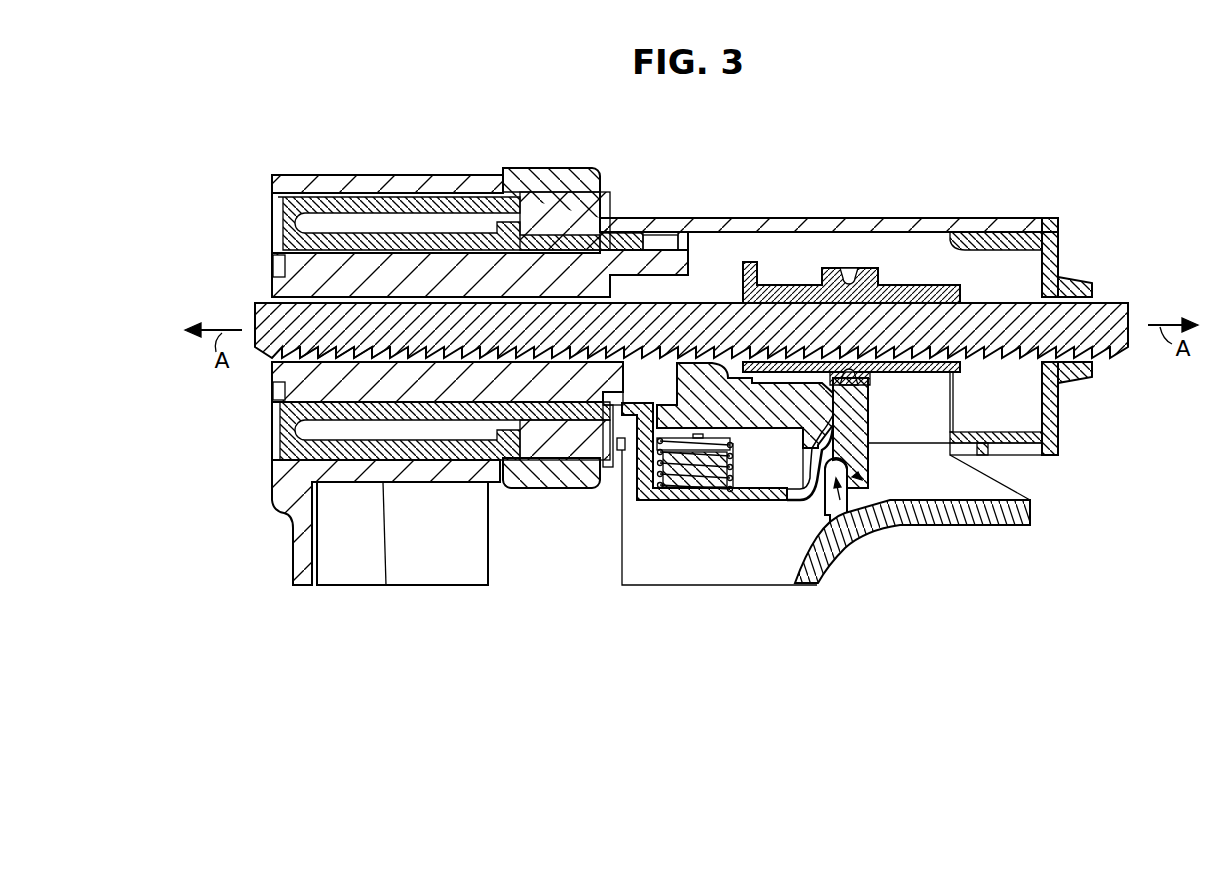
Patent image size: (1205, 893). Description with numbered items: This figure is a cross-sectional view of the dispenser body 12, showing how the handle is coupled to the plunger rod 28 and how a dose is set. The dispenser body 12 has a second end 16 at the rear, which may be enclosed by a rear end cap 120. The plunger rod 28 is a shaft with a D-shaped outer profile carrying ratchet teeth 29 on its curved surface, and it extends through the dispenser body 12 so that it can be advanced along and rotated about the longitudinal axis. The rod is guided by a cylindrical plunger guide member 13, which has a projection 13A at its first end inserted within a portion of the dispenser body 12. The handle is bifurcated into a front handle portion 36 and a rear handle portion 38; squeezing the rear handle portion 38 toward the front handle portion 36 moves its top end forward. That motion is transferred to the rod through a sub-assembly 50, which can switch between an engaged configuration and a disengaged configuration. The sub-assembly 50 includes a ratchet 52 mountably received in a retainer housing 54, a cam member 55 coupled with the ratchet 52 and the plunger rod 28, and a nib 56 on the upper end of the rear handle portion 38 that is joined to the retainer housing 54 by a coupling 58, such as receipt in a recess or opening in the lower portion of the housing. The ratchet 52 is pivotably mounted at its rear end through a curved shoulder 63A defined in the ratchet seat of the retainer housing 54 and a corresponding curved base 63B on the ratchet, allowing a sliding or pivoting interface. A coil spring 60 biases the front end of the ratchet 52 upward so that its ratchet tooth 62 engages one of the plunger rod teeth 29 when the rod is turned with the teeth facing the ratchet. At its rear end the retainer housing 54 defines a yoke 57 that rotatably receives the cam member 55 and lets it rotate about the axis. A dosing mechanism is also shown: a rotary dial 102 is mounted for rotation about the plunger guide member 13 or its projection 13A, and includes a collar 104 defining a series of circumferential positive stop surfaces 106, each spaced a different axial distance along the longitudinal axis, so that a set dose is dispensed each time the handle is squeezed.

The dispenser body 12 is at (528, 142).
The rotary dial 102 is at (568, 168).
The collar 104 is at (610, 232).
The positive stop surfaces 106 is at (663, 236).
The ratchet tooth 62 is at (677, 362).
The plunger guide member 13 is at (797, 228).
The yoke 57 is at (850, 270).
The cam member 55 is at (908, 285).
The second end 16 is at (995, 190).
The rear end cap 120 is at (1060, 253).
The plunger rod 28 is at (1110, 322).
The projection 13A is at (320, 278).
The ratchet teeth 29 is at (350, 366).
The front handle portion 36 is at (293, 537).
The sub-assembly 50 is at (663, 560).
The retainer housing 54 is at (712, 485).
The coil spring 60 is at (744, 482).
The ratchet 52 is at (785, 412).
The rear handle portion 38 is at (780, 586).
The nib 56 is at (838, 487).
The coupling 58 is at (893, 507).
The curved shoulder 63A is at (858, 466).
The curved base 63B is at (840, 410).